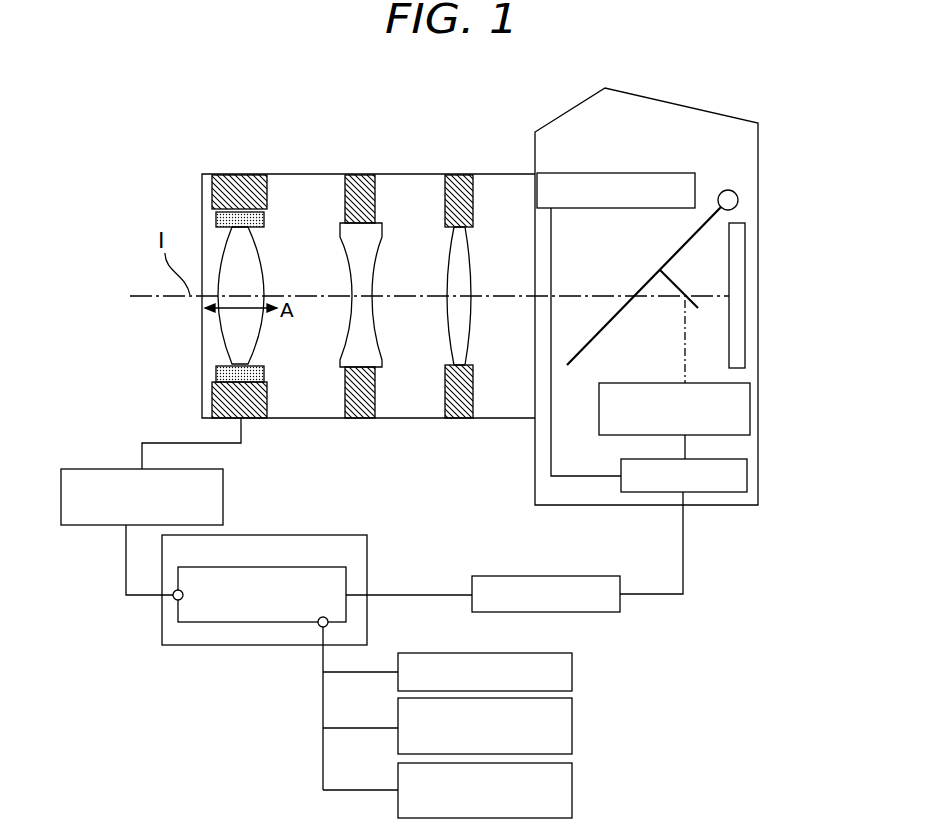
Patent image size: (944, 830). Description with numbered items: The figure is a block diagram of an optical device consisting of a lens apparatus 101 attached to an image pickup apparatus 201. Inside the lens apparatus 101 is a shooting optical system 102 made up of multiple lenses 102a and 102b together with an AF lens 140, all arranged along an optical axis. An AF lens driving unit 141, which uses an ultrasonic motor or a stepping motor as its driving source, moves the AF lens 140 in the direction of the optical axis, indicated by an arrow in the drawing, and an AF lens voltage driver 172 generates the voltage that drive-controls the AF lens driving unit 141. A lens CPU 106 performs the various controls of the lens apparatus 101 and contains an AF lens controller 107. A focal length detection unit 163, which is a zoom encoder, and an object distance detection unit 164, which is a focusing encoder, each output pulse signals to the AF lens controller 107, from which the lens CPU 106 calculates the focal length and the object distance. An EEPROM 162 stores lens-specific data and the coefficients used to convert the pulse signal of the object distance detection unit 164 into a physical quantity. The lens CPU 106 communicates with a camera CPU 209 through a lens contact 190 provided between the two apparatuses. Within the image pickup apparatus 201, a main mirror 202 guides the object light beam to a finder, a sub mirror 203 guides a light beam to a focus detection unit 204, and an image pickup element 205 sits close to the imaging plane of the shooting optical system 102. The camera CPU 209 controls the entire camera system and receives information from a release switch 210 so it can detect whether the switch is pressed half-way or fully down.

The lens apparatus 101 is at (202, 174).
The shooting optical system 102 is at (316, 88).
The lens 102a is at (340, 233).
The lens 102b is at (452, 257).
The AF lens 140 is at (230, 336).
The AF lens driving unit 141 is at (250, 418).
The AF lens voltage driver 172 is at (104, 469).
The lens CPU 106 is at (267, 535).
The AF lens controller 107 is at (250, 622).
The lens contact 190 is at (516, 576).
The EEPROM 162 is at (572, 672).
The focal length detection unit 163 is at (572, 725).
The object distance detection unit 164 is at (572, 786).
The image pickup apparatus 201 is at (758, 123).
The main mirror 202 is at (737, 196).
The sub mirror 203 is at (680, 283).
The focus detection unit 204 is at (750, 405).
The image pickup element 205 is at (745, 312).
The camera CPU 209 is at (747, 478).
The release switch 210 is at (610, 173).